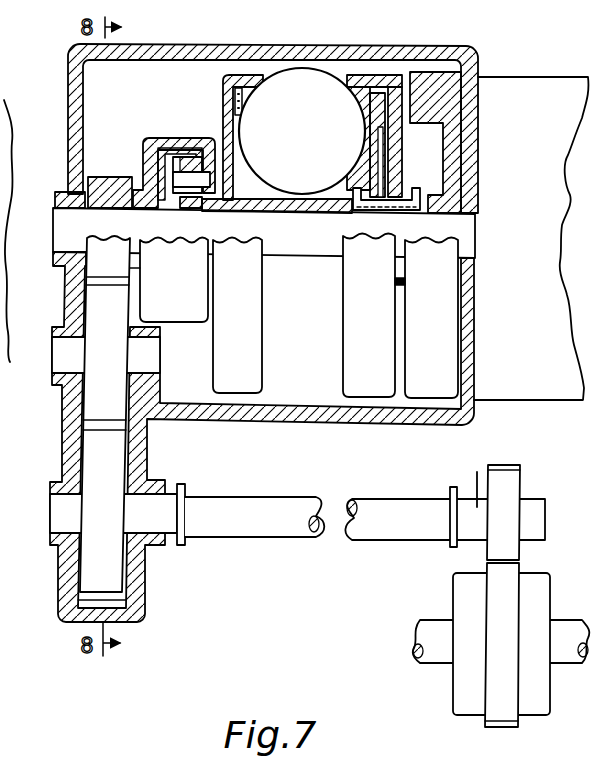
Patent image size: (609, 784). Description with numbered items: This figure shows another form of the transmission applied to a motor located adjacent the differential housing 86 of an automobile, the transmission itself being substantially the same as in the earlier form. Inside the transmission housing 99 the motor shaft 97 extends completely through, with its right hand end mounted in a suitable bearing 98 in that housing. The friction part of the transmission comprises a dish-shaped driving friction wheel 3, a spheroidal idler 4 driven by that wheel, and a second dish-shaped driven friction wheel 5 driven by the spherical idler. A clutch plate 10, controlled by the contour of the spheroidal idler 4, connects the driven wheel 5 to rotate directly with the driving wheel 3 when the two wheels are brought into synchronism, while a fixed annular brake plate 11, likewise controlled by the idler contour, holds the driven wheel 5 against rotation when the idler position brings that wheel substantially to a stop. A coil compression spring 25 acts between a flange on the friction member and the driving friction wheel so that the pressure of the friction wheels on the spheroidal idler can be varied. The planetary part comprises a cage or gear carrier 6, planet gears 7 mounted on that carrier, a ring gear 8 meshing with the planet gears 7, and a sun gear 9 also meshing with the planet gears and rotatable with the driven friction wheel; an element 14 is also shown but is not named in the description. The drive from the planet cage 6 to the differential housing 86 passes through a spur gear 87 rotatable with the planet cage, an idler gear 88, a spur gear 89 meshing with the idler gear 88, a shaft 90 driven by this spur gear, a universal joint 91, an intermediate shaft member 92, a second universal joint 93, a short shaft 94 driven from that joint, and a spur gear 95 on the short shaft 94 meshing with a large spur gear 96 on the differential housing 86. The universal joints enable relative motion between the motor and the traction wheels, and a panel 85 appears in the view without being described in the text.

The dish-shaped friction wheel 3 is at (398, 150).
The spheroidal idler 4 is at (318, 82).
The driven friction wheel 5 is at (223, 104).
The gear carrier 6 is at (146, 150).
The planet gear 7 is at (188, 160).
The ring gear 8 is at (178, 150).
The sun gear 9 is at (192, 203).
The clutch plate 10 is at (393, 88).
The annular brake plate 11 is at (243, 100).
The contact spring 14 is at (372, 115).
The coil compression spring 25 is at (405, 188).
The panel 85 is at (562, 390).
The differential housing 86 is at (465, 688).
The spur gear 87 is at (122, 178).
The idler gear 88 is at (103, 405).
The spur gear 89 is at (88, 567).
The shaft 90 is at (160, 523).
The universal joint 91 is at (185, 540).
The intermediate shaft member 92 is at (290, 528).
The universal joint 93 is at (452, 530).
The short shaft 94 is at (467, 479).
The spur gear 95 is at (513, 492).
The large spur gear 96 is at (508, 587).
The motor shaft 97 is at (318, 247).
The bearing 98 is at (58, 192).
The transmission housing 99 is at (67, 50).